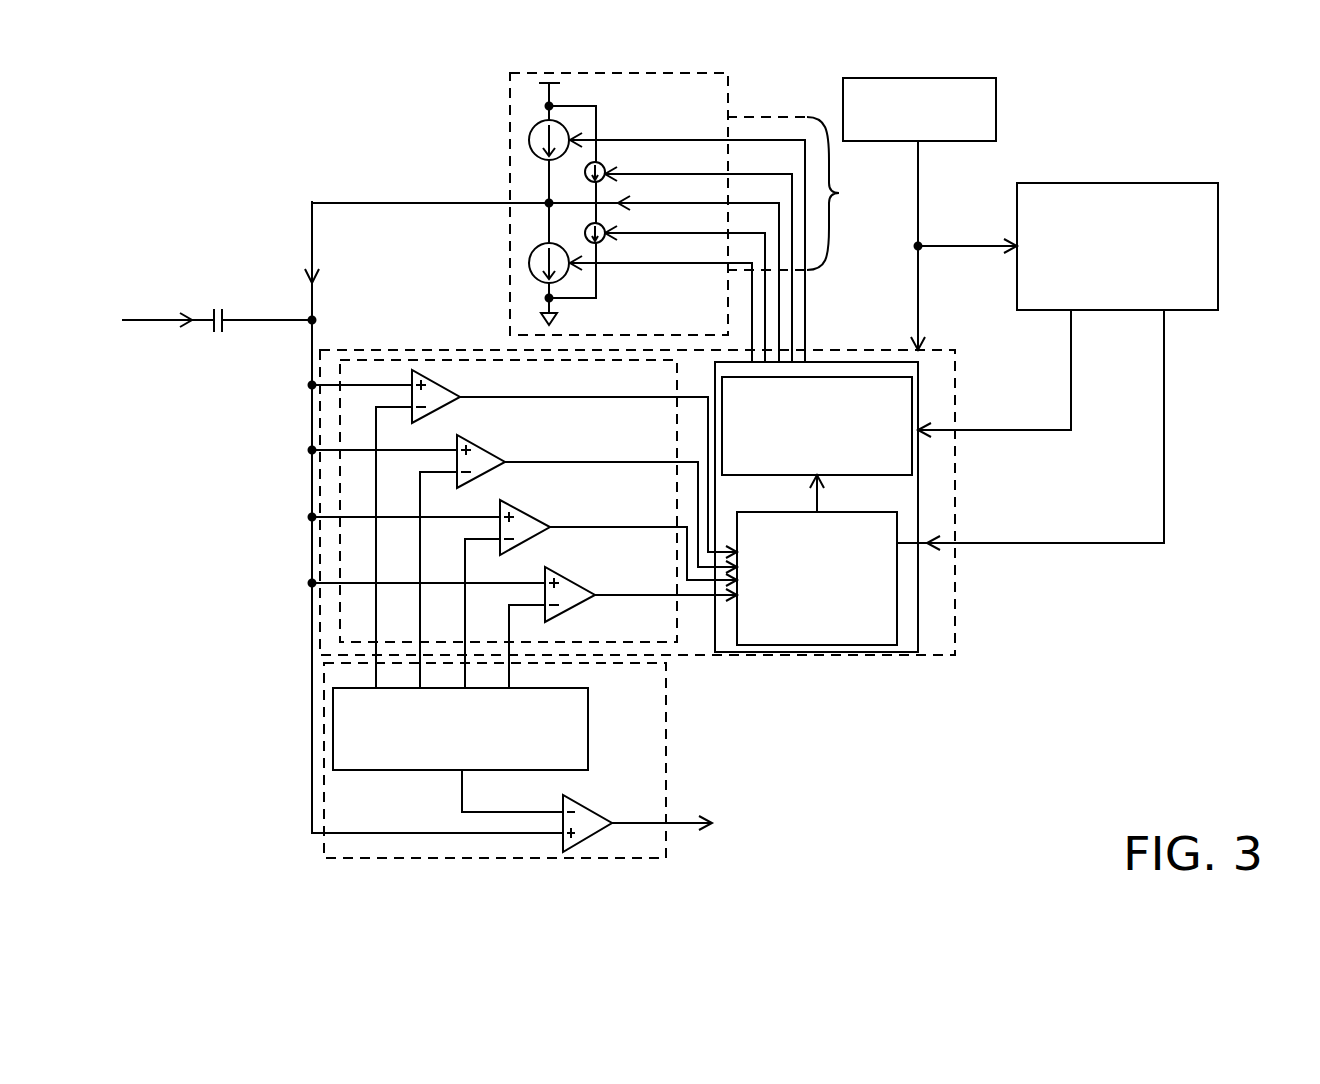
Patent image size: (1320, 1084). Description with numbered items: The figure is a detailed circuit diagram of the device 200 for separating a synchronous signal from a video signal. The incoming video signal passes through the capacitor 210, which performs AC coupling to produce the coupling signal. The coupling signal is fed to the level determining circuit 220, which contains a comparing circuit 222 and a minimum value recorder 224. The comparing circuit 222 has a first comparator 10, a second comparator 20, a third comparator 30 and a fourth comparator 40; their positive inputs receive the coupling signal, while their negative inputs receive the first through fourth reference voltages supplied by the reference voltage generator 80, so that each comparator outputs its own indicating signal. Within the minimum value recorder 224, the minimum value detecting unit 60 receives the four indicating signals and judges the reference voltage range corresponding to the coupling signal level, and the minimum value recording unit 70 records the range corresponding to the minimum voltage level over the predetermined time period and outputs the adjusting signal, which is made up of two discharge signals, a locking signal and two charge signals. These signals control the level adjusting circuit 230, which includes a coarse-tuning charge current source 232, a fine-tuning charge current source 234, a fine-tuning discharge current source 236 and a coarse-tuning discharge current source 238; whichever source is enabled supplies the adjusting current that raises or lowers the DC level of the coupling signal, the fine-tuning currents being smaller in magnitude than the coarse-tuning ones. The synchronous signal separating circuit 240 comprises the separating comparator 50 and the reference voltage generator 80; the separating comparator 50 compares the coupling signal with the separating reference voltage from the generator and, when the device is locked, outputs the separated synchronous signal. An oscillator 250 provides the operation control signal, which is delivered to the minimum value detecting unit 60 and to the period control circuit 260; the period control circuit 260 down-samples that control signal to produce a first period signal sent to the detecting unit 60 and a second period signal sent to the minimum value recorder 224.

The device for separating a synchronous signal 200 is at (1315, 105).
The capacitor 210 is at (221, 296).
The level determining circuit 220 is at (918, 657).
The comparing circuit 222 is at (340, 488).
The minimum value recorder 224 is at (872, 557).
The level adjusting circuit 230 is at (545, 198).
The coarse-tuning charge current source 232 is at (529, 141).
The fine-tuning charge current source 234 is at (585, 177).
The fine-tuning discharge current source 236 is at (585, 237).
The coarse-tuning discharge current source 238 is at (529, 264).
The synchronous signal separating circuit 240 is at (533, 760).
The oscillator 250 is at (996, 110).
The period control circuit 260 is at (1218, 245).
The first comparator 10 is at (440, 411).
The second comparator 20 is at (485, 476).
The third comparator 30 is at (530, 543).
The fourth comparator 40 is at (575, 609).
The separating comparator 50 is at (590, 806).
The minimum value detecting unit 60 is at (897, 592).
The minimum value recording unit 70 is at (912, 468).
The reference voltage generator 80 is at (588, 730).